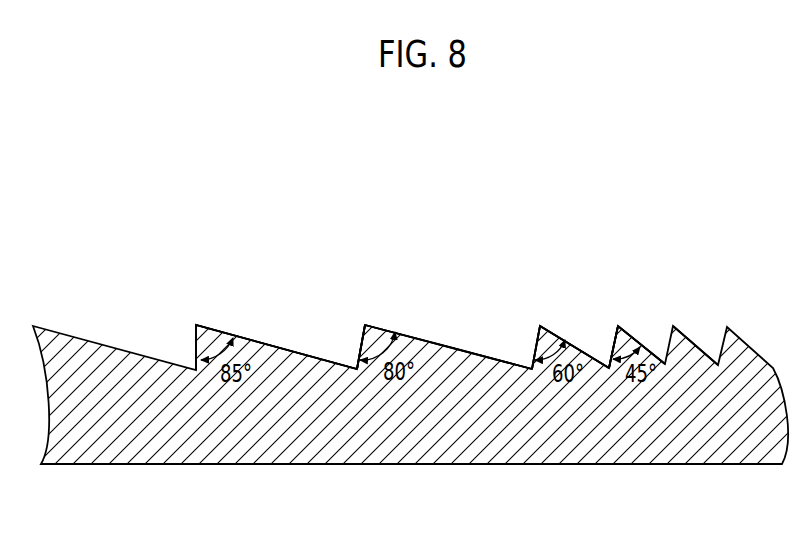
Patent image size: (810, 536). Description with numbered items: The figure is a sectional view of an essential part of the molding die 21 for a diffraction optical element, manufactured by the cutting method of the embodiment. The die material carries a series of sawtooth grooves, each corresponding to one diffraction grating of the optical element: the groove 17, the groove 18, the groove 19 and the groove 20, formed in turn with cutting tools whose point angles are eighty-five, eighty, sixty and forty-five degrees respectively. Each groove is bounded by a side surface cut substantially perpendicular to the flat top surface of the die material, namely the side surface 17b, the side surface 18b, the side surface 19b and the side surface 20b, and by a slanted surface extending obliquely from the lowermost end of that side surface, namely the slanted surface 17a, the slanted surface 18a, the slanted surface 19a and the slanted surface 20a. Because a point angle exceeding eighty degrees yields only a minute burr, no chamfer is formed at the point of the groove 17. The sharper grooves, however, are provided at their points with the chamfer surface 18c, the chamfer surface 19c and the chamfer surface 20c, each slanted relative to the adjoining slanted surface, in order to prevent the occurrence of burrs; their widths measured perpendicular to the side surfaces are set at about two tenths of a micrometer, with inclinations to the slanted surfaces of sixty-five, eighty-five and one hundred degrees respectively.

The groove 17 is at (282, 330).
The slanted surface 17a is at (275, 338).
The side surface 17b is at (338, 338).
The groove 18 is at (442, 333).
The slanted surface 18a is at (387, 335).
The side surface 18b is at (520, 342).
The chamfer surface 18c is at (357, 333).
The groove 19 is at (598, 337).
The slanted surface 19a is at (552, 338).
The side surface 19b is at (605, 336).
The chamfer surface 19c is at (532, 332).
The groove 20 is at (652, 333).
The slanted surface 20a is at (648, 335).
The side surface 20b is at (680, 324).
The chamfer surface 20c is at (615, 333).
The molding die 21 is at (627, 218).